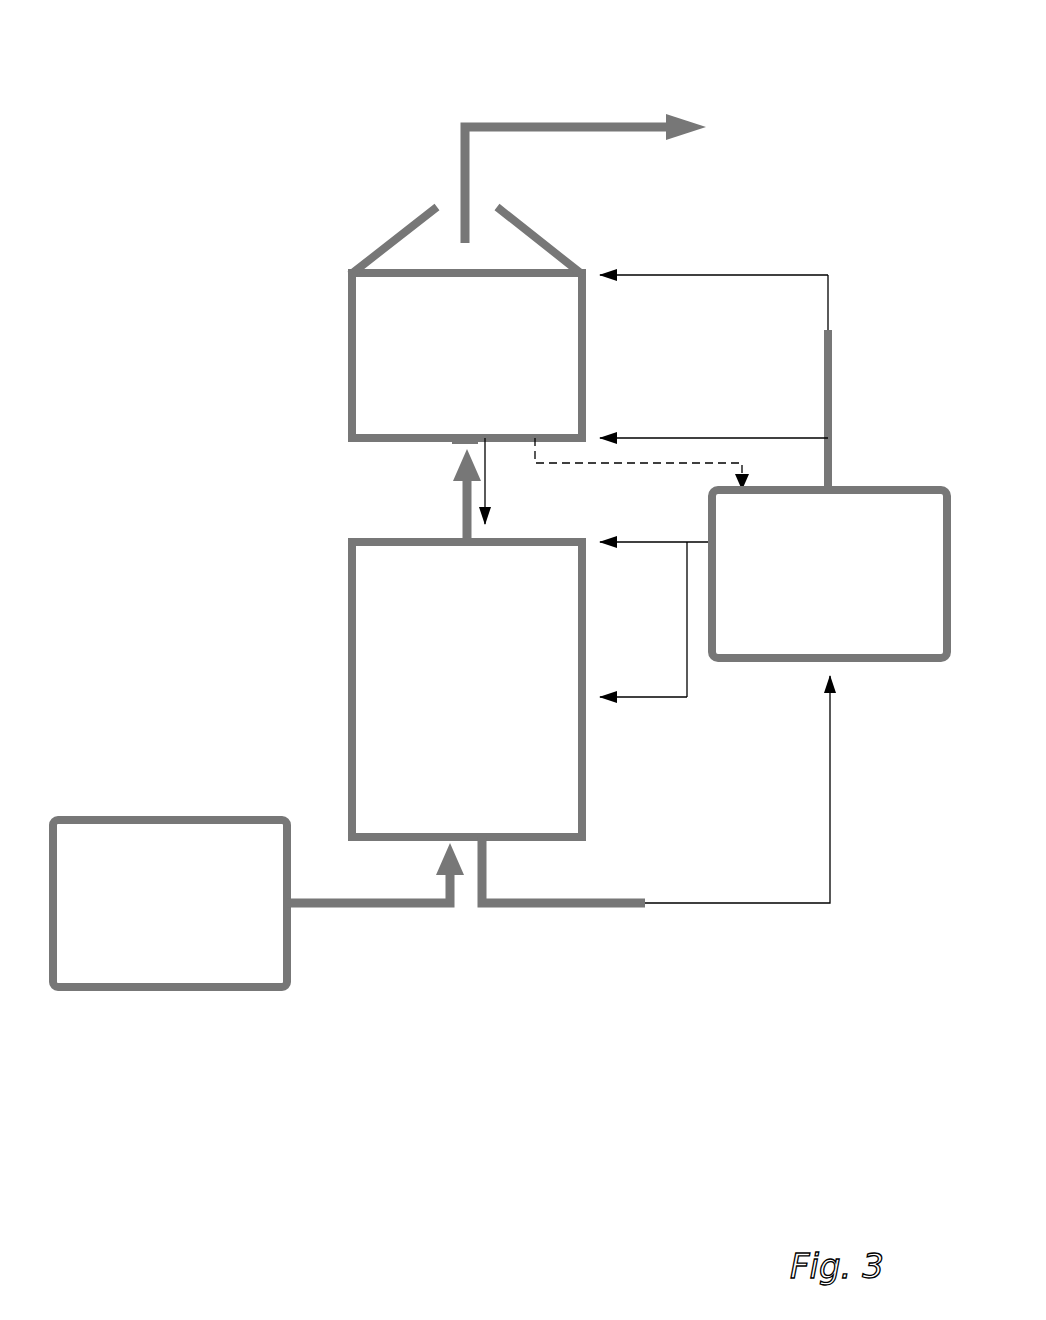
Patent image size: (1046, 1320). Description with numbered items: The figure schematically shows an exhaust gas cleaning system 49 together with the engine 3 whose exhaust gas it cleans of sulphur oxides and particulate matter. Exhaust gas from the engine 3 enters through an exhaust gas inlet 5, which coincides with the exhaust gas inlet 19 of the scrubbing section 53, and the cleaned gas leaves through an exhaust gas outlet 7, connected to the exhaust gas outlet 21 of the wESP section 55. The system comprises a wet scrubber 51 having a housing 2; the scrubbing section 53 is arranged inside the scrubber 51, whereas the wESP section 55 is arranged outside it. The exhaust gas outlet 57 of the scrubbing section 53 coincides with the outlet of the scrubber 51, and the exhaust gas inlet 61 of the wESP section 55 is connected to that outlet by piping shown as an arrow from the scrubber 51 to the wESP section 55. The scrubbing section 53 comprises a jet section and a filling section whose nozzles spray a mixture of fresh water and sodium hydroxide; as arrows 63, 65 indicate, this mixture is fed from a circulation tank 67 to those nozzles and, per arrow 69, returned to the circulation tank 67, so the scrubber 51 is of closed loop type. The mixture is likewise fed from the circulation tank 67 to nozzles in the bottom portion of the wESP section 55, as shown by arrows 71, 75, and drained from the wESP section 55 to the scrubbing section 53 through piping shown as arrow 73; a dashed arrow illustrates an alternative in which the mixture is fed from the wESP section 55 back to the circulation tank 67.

The housing 2 is at (485, 707).
The engine 3 is at (153, 838).
The exhaust gas inlet 5 is at (408, 912).
The exhaust gas outlet 7 is at (450, 210).
The exhaust gas inlet of the scrubbing section 19 is at (368, 887).
The exhaust gas outlet of the wESP section 21 is at (482, 270).
The exhaust gas cleaning system 49 is at (862, 154).
The wet scrubber 51 is at (547, 540).
The scrubbing section 53 is at (408, 689).
The wESP section 55 is at (365, 342).
The exhaust gas outlet of the scrubbing section 57 is at (363, 494).
The exhaust gas inlet of the wESP section 61 is at (455, 440).
The arrow 63 is at (645, 700).
The arrow 65 is at (650, 543).
The circulation tank 67 is at (780, 627).
The arrow 69 is at (830, 848).
The arrow 71 is at (717, 437).
The arrow 73 is at (487, 517).
The arrow 75 is at (735, 273).